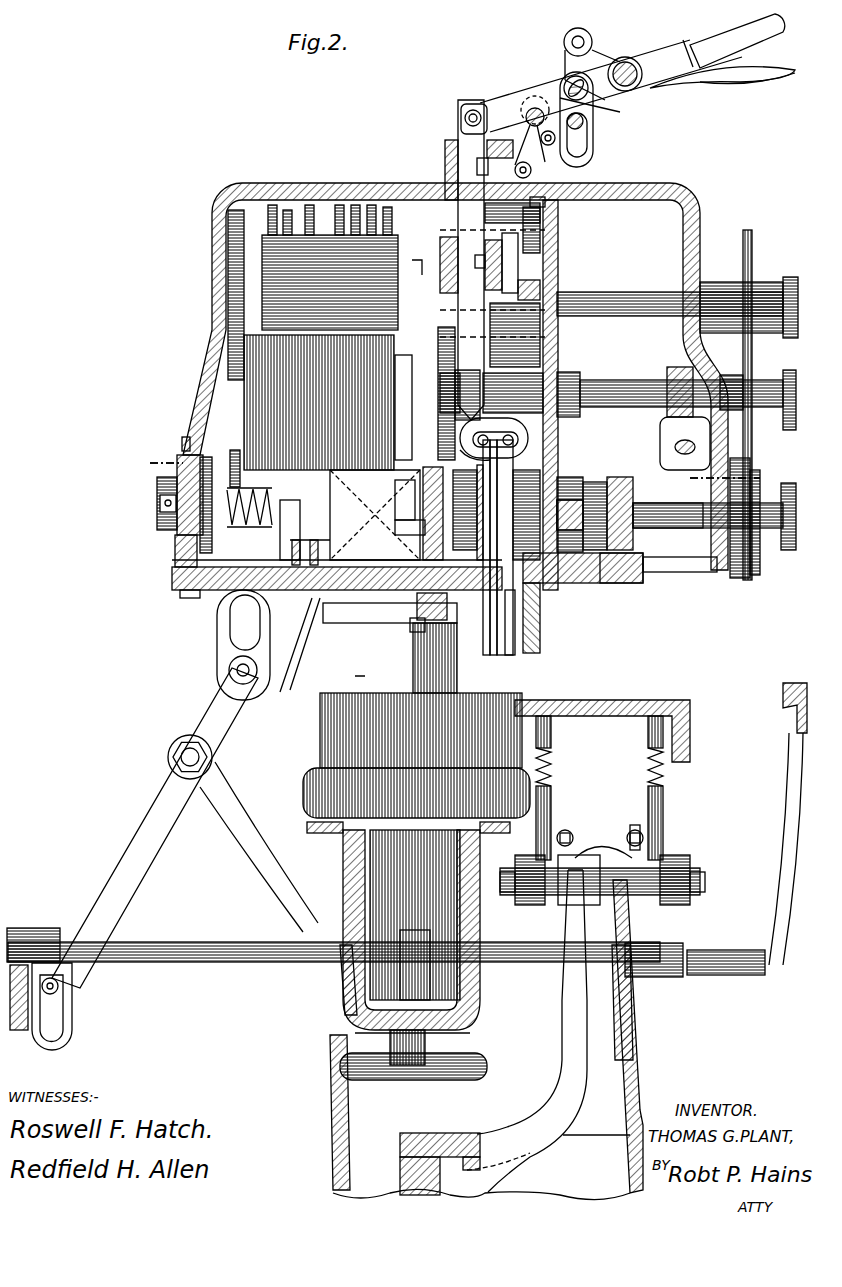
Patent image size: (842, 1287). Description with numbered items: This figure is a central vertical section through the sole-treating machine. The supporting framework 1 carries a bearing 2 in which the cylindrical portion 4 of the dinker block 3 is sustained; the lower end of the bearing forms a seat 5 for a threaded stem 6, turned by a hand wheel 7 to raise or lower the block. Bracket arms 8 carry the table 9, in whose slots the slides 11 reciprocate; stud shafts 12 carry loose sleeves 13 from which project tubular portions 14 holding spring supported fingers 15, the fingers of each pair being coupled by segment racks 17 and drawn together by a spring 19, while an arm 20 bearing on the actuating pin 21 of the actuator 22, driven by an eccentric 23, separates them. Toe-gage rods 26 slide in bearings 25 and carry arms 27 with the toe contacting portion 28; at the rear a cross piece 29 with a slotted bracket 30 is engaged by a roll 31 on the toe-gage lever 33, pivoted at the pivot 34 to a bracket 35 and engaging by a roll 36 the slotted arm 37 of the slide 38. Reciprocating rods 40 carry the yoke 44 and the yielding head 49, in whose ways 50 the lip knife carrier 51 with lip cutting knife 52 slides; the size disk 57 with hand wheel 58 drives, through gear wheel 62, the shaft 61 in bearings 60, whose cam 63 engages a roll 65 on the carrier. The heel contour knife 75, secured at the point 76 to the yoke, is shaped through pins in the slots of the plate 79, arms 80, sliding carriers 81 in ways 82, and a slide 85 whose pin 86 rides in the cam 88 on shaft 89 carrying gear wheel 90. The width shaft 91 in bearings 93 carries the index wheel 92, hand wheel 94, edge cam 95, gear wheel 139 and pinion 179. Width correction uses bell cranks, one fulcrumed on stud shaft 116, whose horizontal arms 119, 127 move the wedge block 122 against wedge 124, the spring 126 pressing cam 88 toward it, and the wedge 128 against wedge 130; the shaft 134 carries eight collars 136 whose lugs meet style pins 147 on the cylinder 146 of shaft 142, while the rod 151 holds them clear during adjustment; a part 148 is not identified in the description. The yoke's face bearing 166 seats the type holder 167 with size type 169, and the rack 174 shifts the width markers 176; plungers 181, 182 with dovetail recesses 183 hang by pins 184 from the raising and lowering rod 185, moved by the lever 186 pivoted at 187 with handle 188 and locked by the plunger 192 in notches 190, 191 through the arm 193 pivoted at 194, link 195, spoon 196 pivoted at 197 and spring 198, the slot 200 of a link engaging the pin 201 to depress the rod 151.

The supporting framework 1 is at (643, 1065).
The bearing 2 is at (480, 908).
The dinker block 3 is at (330, 742).
The cylindrical portion 4 is at (385, 882).
The seat 5 is at (462, 1033).
The stem 6 is at (405, 1030).
The hand wheel 7 is at (468, 1083).
The bracket arms 8 is at (98, 476).
The table 9 is at (616, 692).
The slides 11 is at (372, 676).
The stud shafts 12 is at (695, 878).
The loose sleeves 13 is at (538, 905).
The tubular portion 14 is at (550, 787).
The spring supported finger 15 is at (546, 735).
The segment racks 17 is at (518, 895).
The spring 19 is at (636, 830).
The arm 20 is at (575, 824).
The actuating pin 21 is at (600, 855).
The actuator 22 is at (566, 992).
The eccentric 23 is at (400, 1160).
The bearings 25 is at (340, 965).
The toe-gage rods 26 is at (206, 964).
The arms 27 is at (788, 812).
The toe contacting portion 28 is at (785, 695).
The cross piece 29 is at (18, 1030).
The slotted bracket 30 is at (72, 1020).
The roll or pin 31 is at (58, 988).
The toe-gage lever 33 is at (128, 875).
The pivot 34 is at (181, 757).
The bracket 35 is at (259, 847).
The roll or pin 36 is at (229, 670).
The slotted arm 37 is at (217, 636).
The slide 38 is at (210, 597).
The rods 40 is at (413, 664).
The yoke 44 is at (490, 245).
The head 49 is at (688, 230).
The ways 50 is at (690, 573).
The lip knife carrier 51 is at (641, 585).
The lip cutting knife 52 is at (540, 655).
The size disk 57 is at (752, 568).
The hand wheel 58 is at (792, 550).
The bearings 60 is at (712, 500).
The shaft 61 is at (690, 528).
The gear wheel 62 is at (748, 583).
The cam 63 is at (595, 482).
The roll or pin 65 is at (600, 583).
The heel contour knife 75 is at (485, 655).
The securing point 76 is at (493, 655).
The plate 79 is at (432, 606).
The arms 80 is at (405, 625).
The sliding carriers 81 is at (356, 615).
The ways 82 is at (305, 615).
The slide 85 is at (190, 576).
The pin 86 is at (292, 560).
The cam 88 is at (160, 508).
The shaft 89 is at (160, 500).
The gear wheel 90 is at (200, 480).
The shaft 91 is at (603, 385).
The index wheel 92 is at (755, 375).
The bearings 93 is at (578, 368).
The hand wheel 94 is at (790, 432).
The edge cam 95 is at (688, 368).
The stud shaft 116 is at (183, 446).
The horizontal arm 119 is at (405, 500).
The wedge block 122 is at (408, 521).
The wedge 124 is at (375, 515).
The spring 126 is at (246, 527).
The horizontal arm 127 is at (236, 450).
The wedge 128 is at (226, 550).
The wedge 130 is at (278, 528).
The shaft 134 is at (440, 375).
The collars 136 is at (290, 390).
The gear wheel 139 is at (438, 345).
The shaft 142 is at (672, 282).
The cylinder 146 is at (265, 270).
The pins 147 is at (272, 205).
The gear 148 is at (228, 230).
The arm or rod 151 is at (395, 407).
The face bearing 166 is at (558, 210).
The type holder 167 is at (520, 266).
The type 169 is at (536, 256).
The rack 174 is at (430, 540).
The type or markers 176 is at (505, 655).
The pinion 179 is at (481, 387).
The plunger 181 is at (540, 470).
The plunger 182 is at (530, 456).
The dovetail recesses 183 is at (528, 440).
The pins 184 is at (530, 448).
The raising and lowering rod 185 is at (466, 175).
The lever 186 is at (556, 80).
The pivot 187 is at (625, 57).
The handle 188 is at (778, 33).
The notch 190 is at (456, 275).
The notch 191 is at (478, 163).
The plunger 192 is at (461, 126).
The arm 193 is at (588, 166).
The pivot 194 is at (527, 107).
The pitman or link 195 is at (602, 103).
The spoon or trip 196 is at (742, 82).
The pivot 197 is at (583, 36).
The spring 198 is at (722, 74).
The slot 200 is at (590, 147).
The pin 201 is at (584, 122).